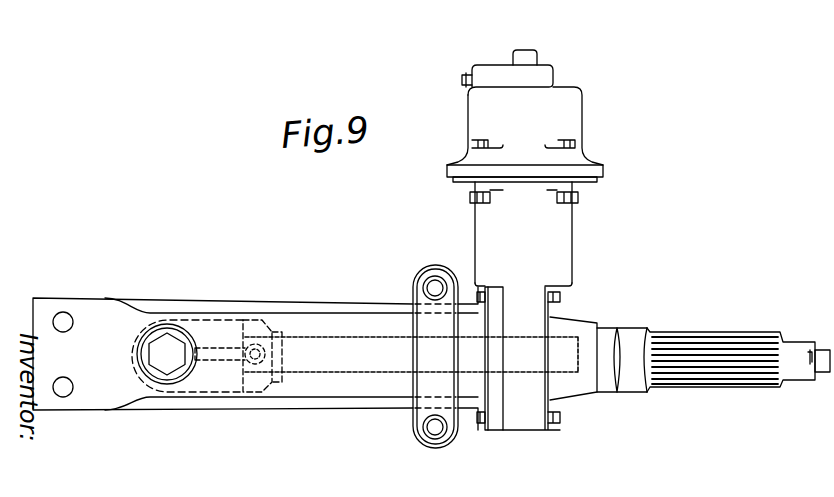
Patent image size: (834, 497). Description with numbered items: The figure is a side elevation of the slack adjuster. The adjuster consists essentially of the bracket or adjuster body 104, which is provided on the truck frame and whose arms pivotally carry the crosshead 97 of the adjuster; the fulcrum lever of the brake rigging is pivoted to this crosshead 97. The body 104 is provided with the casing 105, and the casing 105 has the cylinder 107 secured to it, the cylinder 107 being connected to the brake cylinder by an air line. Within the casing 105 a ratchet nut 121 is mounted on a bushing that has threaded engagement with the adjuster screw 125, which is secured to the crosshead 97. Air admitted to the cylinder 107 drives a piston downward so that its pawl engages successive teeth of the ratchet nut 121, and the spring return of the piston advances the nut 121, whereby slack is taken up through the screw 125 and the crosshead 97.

The adjuster body 104 is at (200, 303).
The crosshead 97 is at (255, 320).
The adjuster screw 125 is at (345, 374).
The casing 105 is at (480, 226).
The cylinder 107 is at (480, 118).
The ratchet nut 121 is at (692, 387).